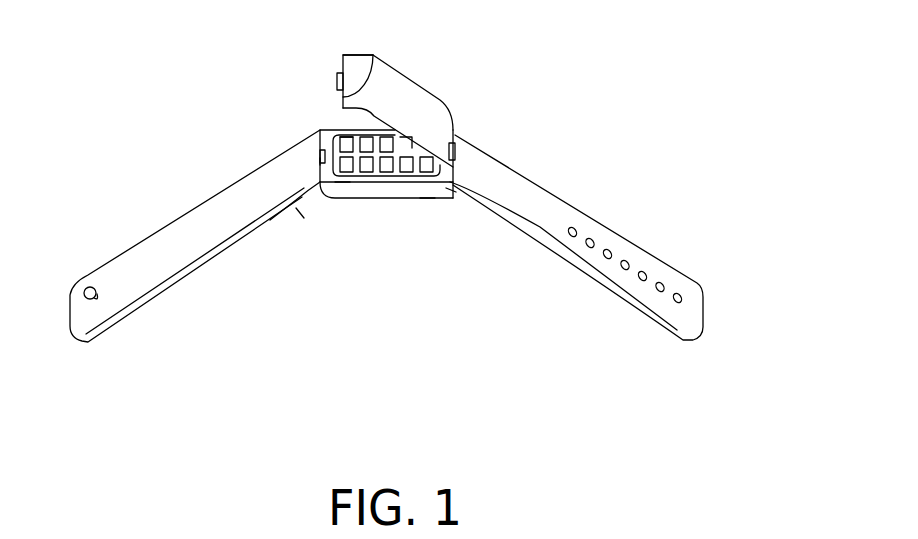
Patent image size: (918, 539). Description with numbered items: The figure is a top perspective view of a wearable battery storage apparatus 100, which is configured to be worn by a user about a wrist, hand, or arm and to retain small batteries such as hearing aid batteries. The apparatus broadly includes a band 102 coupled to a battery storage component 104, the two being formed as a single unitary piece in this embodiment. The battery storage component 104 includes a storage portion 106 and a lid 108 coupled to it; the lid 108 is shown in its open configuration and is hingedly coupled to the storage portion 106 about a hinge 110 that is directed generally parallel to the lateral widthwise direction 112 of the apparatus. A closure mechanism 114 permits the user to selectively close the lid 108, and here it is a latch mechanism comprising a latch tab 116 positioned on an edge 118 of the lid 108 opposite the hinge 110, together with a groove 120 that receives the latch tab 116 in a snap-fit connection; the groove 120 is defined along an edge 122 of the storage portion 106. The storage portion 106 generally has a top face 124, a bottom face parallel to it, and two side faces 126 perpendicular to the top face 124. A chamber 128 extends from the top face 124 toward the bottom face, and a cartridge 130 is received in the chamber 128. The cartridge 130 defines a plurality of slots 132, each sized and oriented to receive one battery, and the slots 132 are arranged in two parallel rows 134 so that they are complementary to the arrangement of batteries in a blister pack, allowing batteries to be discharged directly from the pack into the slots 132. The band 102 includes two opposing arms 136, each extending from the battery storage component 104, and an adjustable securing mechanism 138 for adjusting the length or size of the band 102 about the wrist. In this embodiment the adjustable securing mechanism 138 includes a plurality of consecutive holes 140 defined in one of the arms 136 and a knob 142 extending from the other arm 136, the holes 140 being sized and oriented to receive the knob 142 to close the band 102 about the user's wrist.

The wearable battery storage apparatus 100 is at (603, 138).
The band 102 is at (138, 290).
The battery storage component 104 is at (405, 272).
The storage portion 106 is at (355, 193).
The lid 108 is at (425, 105).
The hinge 110 is at (454, 141).
The widthwise direction 112 is at (749, 342).
The closure mechanism 114 is at (300, 127).
The latch tab 116 is at (337, 80).
The edge 118 is at (373, 54).
The groove 120 is at (320, 158).
The edge 122 is at (300, 213).
The top face 124 is at (450, 190).
The side faces 126 is at (427, 195).
The chamber 128 is at (343, 183).
The cartridge 130 is at (382, 187).
The slots 132 is at (348, 147).
The rows 134 is at (313, 121).
The arms 136 is at (533, 187).
The adjustable securing mechanism 138 is at (645, 358).
The holes 140 is at (624, 259).
The knob 142 is at (88, 286).